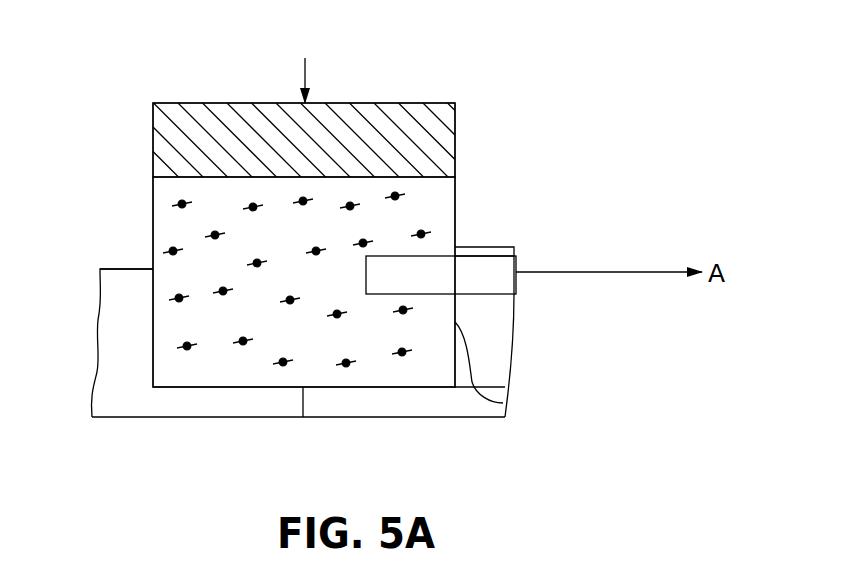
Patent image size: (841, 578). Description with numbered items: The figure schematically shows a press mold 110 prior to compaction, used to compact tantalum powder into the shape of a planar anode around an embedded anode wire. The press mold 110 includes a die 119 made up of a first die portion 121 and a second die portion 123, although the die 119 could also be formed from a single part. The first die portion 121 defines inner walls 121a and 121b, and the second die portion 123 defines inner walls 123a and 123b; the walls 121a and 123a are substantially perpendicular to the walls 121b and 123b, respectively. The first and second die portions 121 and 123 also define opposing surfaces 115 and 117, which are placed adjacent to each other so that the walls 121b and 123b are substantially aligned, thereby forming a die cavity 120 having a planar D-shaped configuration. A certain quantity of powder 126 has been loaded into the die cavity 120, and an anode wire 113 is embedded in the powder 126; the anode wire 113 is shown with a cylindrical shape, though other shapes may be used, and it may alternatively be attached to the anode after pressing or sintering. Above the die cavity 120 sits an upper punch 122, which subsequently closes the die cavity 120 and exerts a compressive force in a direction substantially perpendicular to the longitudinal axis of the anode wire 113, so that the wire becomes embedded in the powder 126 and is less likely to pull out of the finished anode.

The press mold 110 is at (112, 88).
The anode wire 113 is at (498, 277).
The opposing surface 115 is at (303, 392).
The opposing surface 117 is at (304, 402).
The die 119 is at (503, 355).
The die cavity 120 is at (432, 203).
The first die portion 121 is at (117, 355).
The inner wall 121a is at (152, 302).
The inner wall 121b is at (187, 388).
The upper punch 122 is at (428, 123).
The second die portion 123 is at (490, 325).
The inner wall 123a is at (503, 403).
The inner wall 123b is at (417, 390).
The powder 126 is at (181, 200).